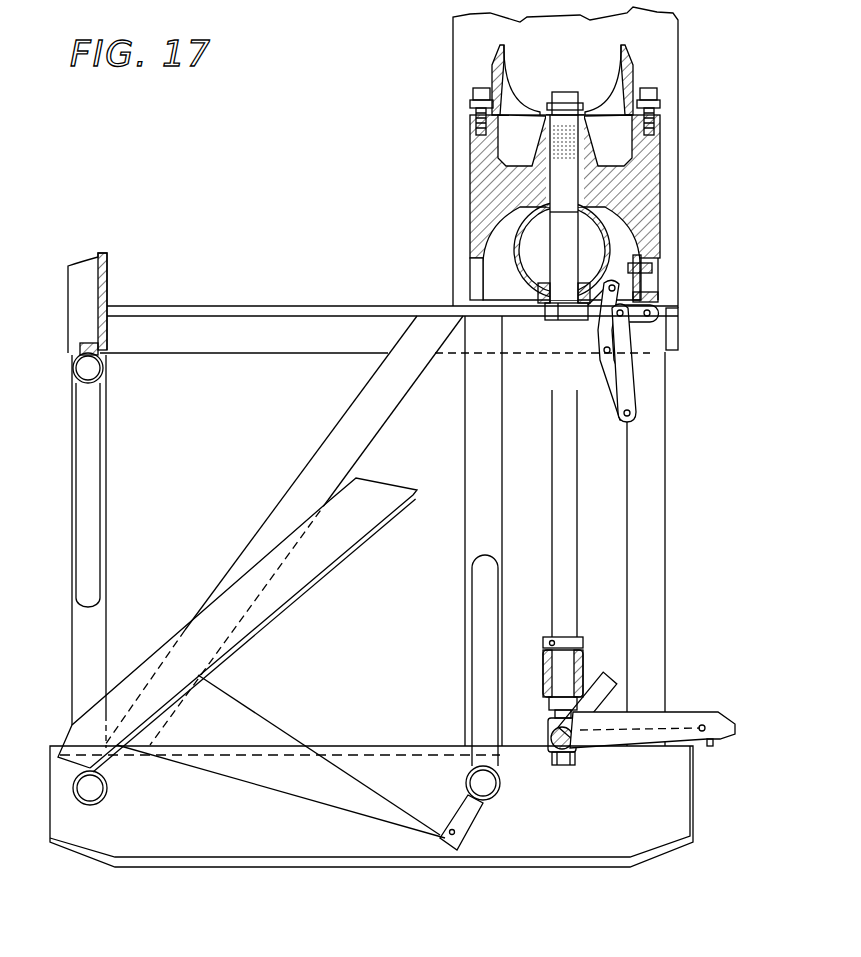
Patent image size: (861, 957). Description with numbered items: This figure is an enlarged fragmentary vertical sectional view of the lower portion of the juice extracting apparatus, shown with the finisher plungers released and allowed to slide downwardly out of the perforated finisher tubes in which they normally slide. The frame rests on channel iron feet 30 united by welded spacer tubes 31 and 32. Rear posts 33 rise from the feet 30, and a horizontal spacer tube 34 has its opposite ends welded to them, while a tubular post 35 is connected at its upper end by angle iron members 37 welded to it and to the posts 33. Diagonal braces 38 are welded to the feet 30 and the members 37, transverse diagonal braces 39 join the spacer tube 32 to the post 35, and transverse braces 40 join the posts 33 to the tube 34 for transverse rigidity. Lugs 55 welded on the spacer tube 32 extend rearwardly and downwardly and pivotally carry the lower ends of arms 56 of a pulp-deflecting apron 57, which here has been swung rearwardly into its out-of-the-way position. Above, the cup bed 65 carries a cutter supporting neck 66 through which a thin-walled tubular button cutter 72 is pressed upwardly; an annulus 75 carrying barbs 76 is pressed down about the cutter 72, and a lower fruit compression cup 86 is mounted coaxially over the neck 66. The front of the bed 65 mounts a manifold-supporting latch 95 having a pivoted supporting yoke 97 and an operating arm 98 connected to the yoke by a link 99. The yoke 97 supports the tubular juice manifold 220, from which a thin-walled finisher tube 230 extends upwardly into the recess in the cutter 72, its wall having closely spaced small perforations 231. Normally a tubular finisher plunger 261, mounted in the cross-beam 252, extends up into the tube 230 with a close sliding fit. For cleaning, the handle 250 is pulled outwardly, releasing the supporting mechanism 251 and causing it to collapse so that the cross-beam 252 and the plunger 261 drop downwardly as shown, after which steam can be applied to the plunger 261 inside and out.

The channel iron feet 30 is at (306, 835).
The spacer tube 31 is at (101, 801).
The spacer tube 32 is at (500, 790).
The rear posts 33 is at (82, 644).
The horizontal spacer tube 34 is at (78, 367).
The tubular post 35 is at (468, 530).
The angle iron members 37 is at (296, 345).
The diagonal braces 38 is at (316, 460).
The transverse diagonal braces 39 is at (481, 678).
The transverse braces 40 is at (86, 487).
The lugs 55 is at (470, 818).
The arms 56 is at (268, 742).
The pulp-deflecting apron 57 is at (245, 631).
The cup bed 65 is at (640, 170).
The cutter supporting neck 66 is at (587, 149).
The tubular button cutter 72 is at (572, 93).
The annulus 75 is at (553, 114).
The barbs 76 is at (586, 114).
The lower fruit compression cup 86 is at (633, 74).
The manifold-supporting latch 95 is at (603, 353).
The supporting yoke 97 is at (552, 318).
The operating arm 98 is at (622, 392).
The link 99 is at (622, 327).
The tubular juice manifold 220 is at (535, 273).
The finisher tube 230 is at (557, 211).
The perforations 231 is at (553, 140).
The handle 250 is at (615, 688).
The mechanism 251 is at (700, 713).
The cross-beam 252 is at (587, 670).
The tubular finisher plunger 261 is at (572, 566).